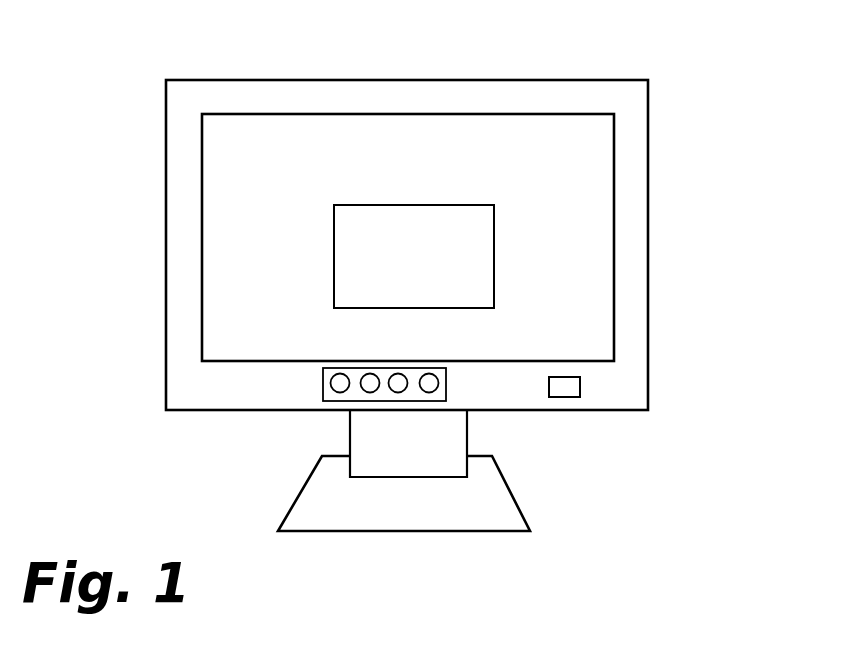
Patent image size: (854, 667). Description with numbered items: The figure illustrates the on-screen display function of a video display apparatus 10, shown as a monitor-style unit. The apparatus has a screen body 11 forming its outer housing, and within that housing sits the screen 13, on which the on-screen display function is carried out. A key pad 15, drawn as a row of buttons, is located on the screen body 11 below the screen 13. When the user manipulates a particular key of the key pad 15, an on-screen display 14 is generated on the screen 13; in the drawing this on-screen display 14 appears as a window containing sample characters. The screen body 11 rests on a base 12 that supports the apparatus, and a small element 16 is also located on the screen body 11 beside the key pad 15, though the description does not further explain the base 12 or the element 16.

The video display apparatus 10 is at (137, 50).
The screen body 11 is at (648, 247).
The base / stand 12 is at (513, 499).
The screen 13 is at (565, 132).
The on-screen display 14 is at (494, 307).
The key pad 15 is at (323, 400).
The indicator / sensor 16 is at (580, 395).